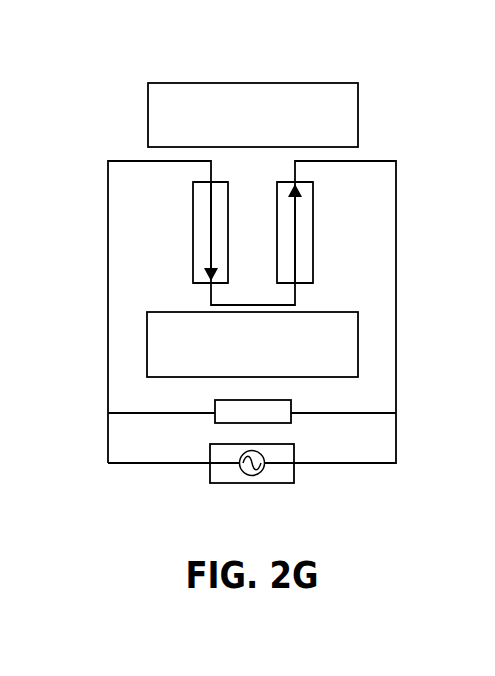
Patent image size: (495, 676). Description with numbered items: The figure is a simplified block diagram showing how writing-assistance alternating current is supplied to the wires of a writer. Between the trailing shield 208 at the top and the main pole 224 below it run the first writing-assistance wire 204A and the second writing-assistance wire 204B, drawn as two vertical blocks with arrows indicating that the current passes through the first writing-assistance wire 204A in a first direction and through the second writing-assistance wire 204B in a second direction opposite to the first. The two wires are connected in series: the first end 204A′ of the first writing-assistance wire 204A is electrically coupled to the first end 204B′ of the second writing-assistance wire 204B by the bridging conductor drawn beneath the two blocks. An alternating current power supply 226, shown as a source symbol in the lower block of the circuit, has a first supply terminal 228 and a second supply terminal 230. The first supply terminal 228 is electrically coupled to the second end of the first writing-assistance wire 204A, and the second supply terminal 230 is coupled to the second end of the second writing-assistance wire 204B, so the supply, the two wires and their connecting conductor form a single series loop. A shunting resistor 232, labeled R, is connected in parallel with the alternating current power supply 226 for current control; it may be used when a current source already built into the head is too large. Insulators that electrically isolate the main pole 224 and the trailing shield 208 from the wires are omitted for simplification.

The trailing shield 208 is at (340, 83).
The main pole 224 is at (158, 326).
The first writing-assistance wire 204A is at (200, 217).
The first end of first writing-assistance wire 204A′ is at (193, 282).
The second writing-assistance wire 204B is at (303, 217).
The first end of second writing-assistance wire 204B′ is at (313, 282).
The shunting resistor 232 is at (282, 415).
The alternating current power supply 226 is at (248, 477).
The first supply terminal 228 is at (217, 468).
The second supply terminal 230 is at (285, 467).